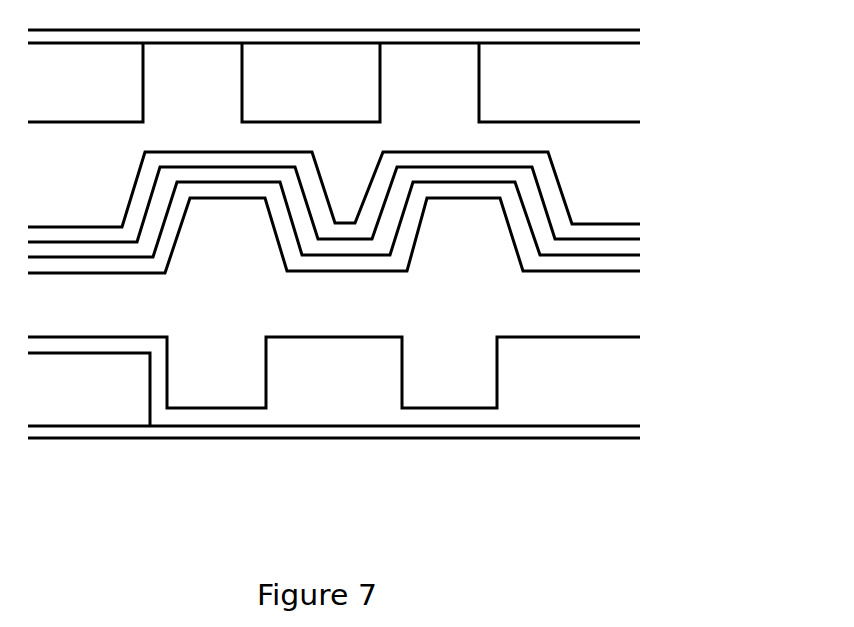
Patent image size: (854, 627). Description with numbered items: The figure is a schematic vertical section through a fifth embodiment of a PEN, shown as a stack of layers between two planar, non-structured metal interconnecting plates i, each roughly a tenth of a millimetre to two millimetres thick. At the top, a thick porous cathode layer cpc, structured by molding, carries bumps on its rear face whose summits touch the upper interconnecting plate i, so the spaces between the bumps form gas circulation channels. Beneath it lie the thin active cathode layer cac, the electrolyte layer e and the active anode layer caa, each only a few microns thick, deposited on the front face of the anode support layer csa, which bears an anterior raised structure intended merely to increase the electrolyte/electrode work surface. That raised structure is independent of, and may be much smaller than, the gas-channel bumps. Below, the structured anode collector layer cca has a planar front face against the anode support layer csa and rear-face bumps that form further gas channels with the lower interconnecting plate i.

The interconnecting plate i is at (666, 37).
The porous cathode layer cpc is at (663, 172).
The active cathode layer cac is at (668, 227).
The electrolyte layer e is at (670, 249).
The active anode layer caa is at (668, 272).
The anode support layer csa is at (667, 319).
The anode collector layer cca is at (672, 353).